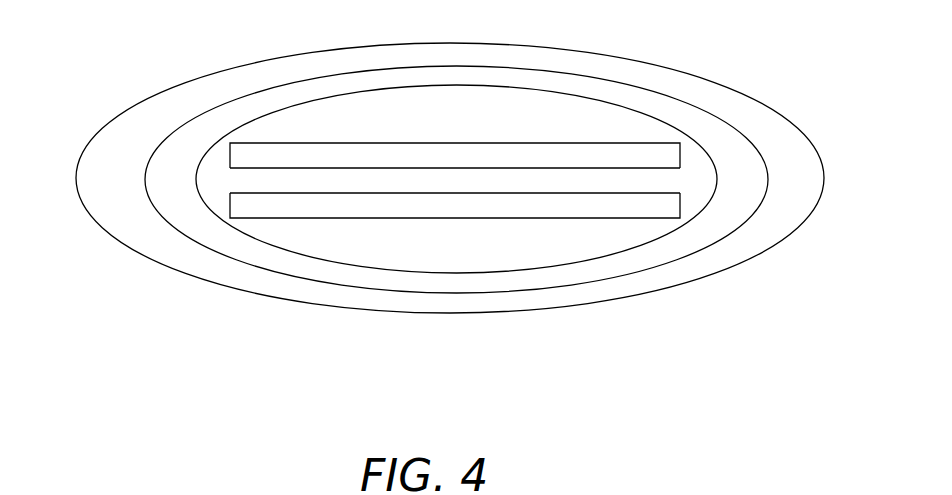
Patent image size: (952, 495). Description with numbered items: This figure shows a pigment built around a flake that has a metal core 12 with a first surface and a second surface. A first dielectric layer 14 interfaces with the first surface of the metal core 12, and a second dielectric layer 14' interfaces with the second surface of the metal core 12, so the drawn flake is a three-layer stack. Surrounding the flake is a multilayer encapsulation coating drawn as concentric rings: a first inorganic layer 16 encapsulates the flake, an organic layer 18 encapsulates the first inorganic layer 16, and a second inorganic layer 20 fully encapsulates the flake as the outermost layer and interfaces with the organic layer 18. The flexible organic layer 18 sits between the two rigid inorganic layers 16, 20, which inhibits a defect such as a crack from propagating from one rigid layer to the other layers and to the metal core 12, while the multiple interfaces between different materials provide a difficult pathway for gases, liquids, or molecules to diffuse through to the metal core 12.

The second inorganic layer 20 is at (92, 138).
The organic layer 18 is at (168, 145).
The first inorganic layer 16 is at (212, 147).
The first dielectric layer 14 is at (569, 141).
The metal core 12 is at (680, 172).
The second dielectric layer 14' is at (572, 194).